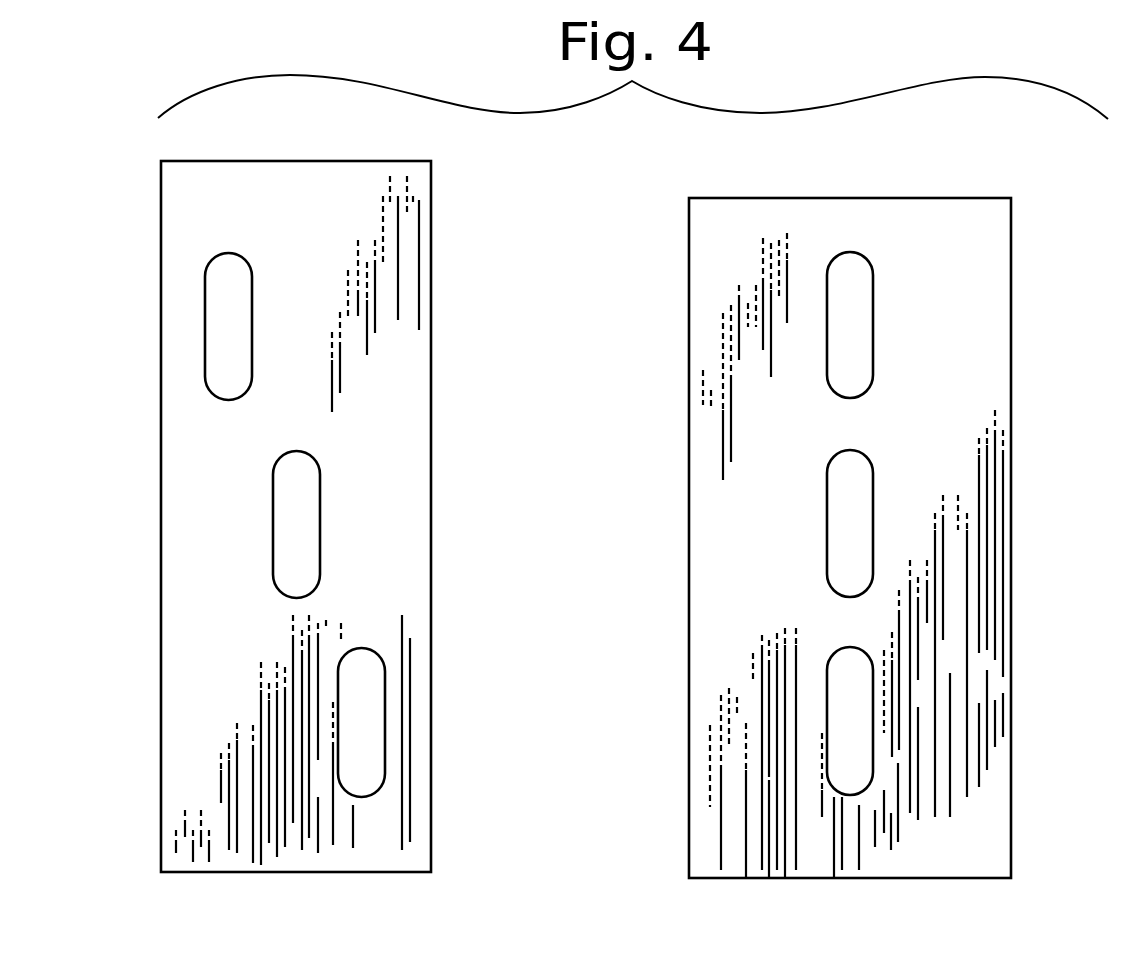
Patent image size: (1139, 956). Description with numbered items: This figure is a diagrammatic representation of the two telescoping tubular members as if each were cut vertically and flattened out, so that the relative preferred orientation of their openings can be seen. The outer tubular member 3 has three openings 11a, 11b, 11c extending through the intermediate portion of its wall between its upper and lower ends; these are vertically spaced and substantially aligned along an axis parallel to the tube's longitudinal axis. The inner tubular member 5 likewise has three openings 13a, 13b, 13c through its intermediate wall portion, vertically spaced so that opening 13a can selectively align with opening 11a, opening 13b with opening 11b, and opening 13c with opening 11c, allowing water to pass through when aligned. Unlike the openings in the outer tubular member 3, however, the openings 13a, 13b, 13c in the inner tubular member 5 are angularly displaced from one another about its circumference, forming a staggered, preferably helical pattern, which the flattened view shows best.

The outer tubular member 3 is at (952, 477).
The inner tubular member 5 is at (378, 355).
The opening 11a is at (855, 313).
The opening 11b is at (853, 537).
The opening 11c is at (853, 730).
The opening 13a is at (233, 283).
The opening 13b is at (297, 498).
The opening 13c is at (368, 732).